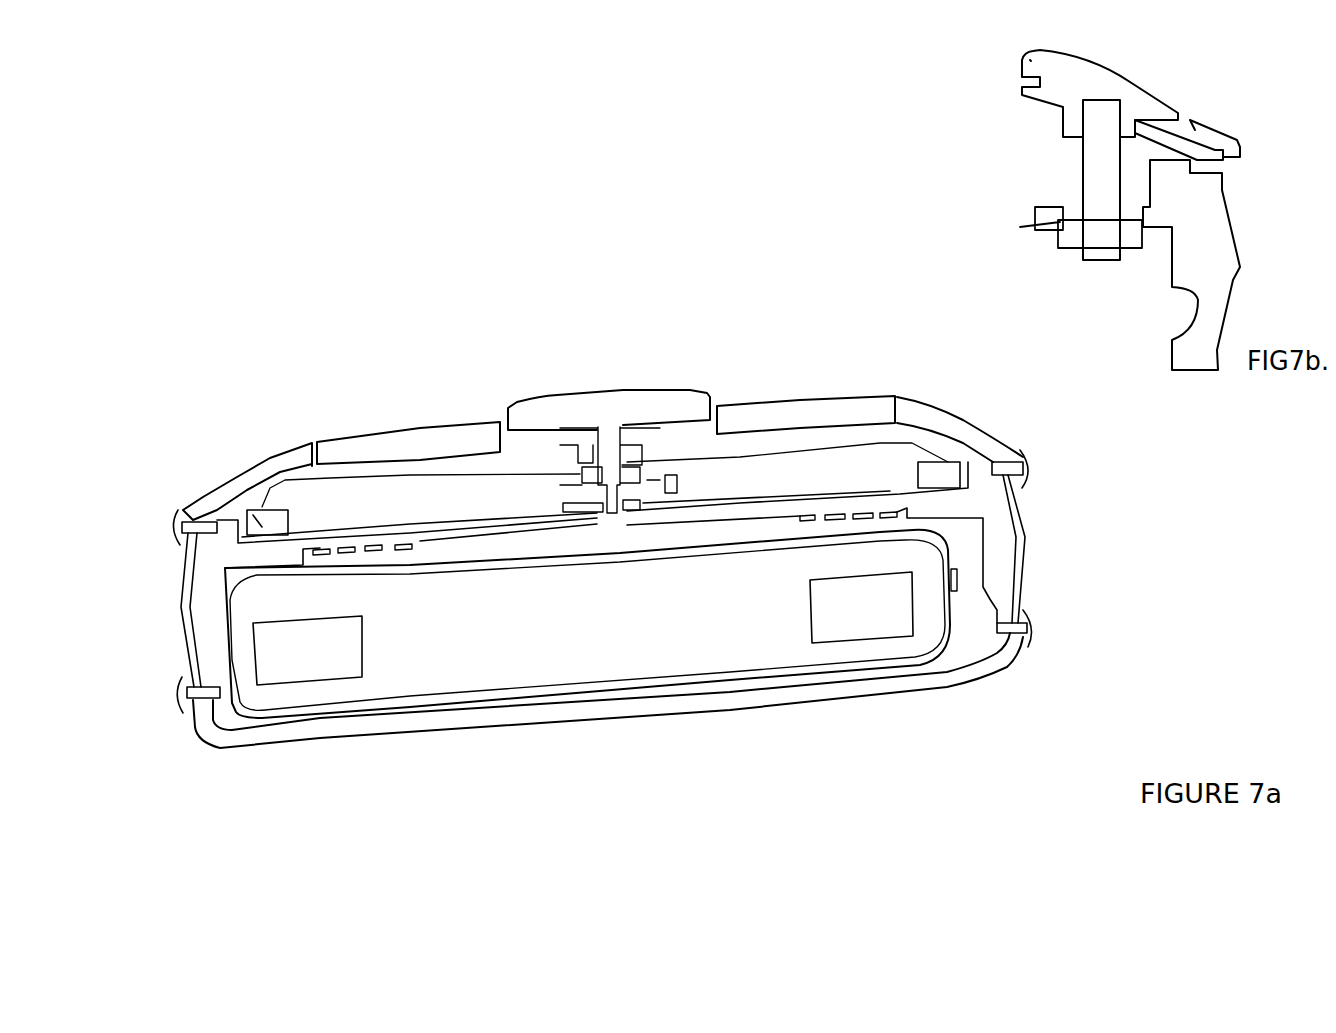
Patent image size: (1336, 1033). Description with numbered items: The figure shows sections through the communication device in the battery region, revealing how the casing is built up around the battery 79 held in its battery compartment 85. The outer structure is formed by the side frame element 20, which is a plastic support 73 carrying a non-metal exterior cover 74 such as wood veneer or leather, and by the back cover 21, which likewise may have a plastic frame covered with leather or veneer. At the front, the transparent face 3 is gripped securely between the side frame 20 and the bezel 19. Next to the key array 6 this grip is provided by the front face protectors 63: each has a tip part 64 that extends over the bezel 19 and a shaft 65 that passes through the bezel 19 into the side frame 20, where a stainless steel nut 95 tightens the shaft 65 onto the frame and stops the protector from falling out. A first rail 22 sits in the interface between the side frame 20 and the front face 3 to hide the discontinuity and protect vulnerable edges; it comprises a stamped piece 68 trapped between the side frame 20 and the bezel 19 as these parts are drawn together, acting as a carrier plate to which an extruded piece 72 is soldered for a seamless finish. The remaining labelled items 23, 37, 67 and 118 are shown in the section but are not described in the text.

In FIG. 7A, the transparent face 3 is at (375, 437).
In FIG. 7A, the key array 6 is at (637, 408).
In FIG. 7A, the bezel 19 is at (238, 472).
In FIG. 7A, the side frame element 20 is at (1000, 529).
In FIG. 7B, the side frame element 20 is at (1203, 258).
In FIG. 7A, the back cover 21 is at (970, 683).
In FIG. 7A, the first rail 22 is at (1030, 455).
In FIG. 7A, the hinge pin 23 is at (1037, 638).
In FIG. 7A, the cover segment 37 is at (787, 447).
In FIG. 7B, the front face protector 63 is at (1140, 82).
In FIG. 7B, the tip part 64 is at (1070, 73).
In FIG. 7B, the shaft 65 is at (1100, 163).
In FIG. 7A, the inner wall 67 is at (520, 454).
In FIG. 7A, the stamped piece 68 is at (180, 543).
In FIG. 7A, the extruded piece 72 is at (182, 520).
In FIG. 7A, the plastic support 73 is at (159, 696).
In FIG. 7A, the exterior cover 74 is at (213, 623).
In FIG. 7A, the battery 79 is at (763, 650).
In FIG. 7A, the battery compartment 85 is at (963, 580).
In FIG. 7A, the nut 95 is at (365, 553).
In FIG. 7B, the nut 95 is at (1060, 247).
In FIG. 7A, the slots 118 is at (515, 520).